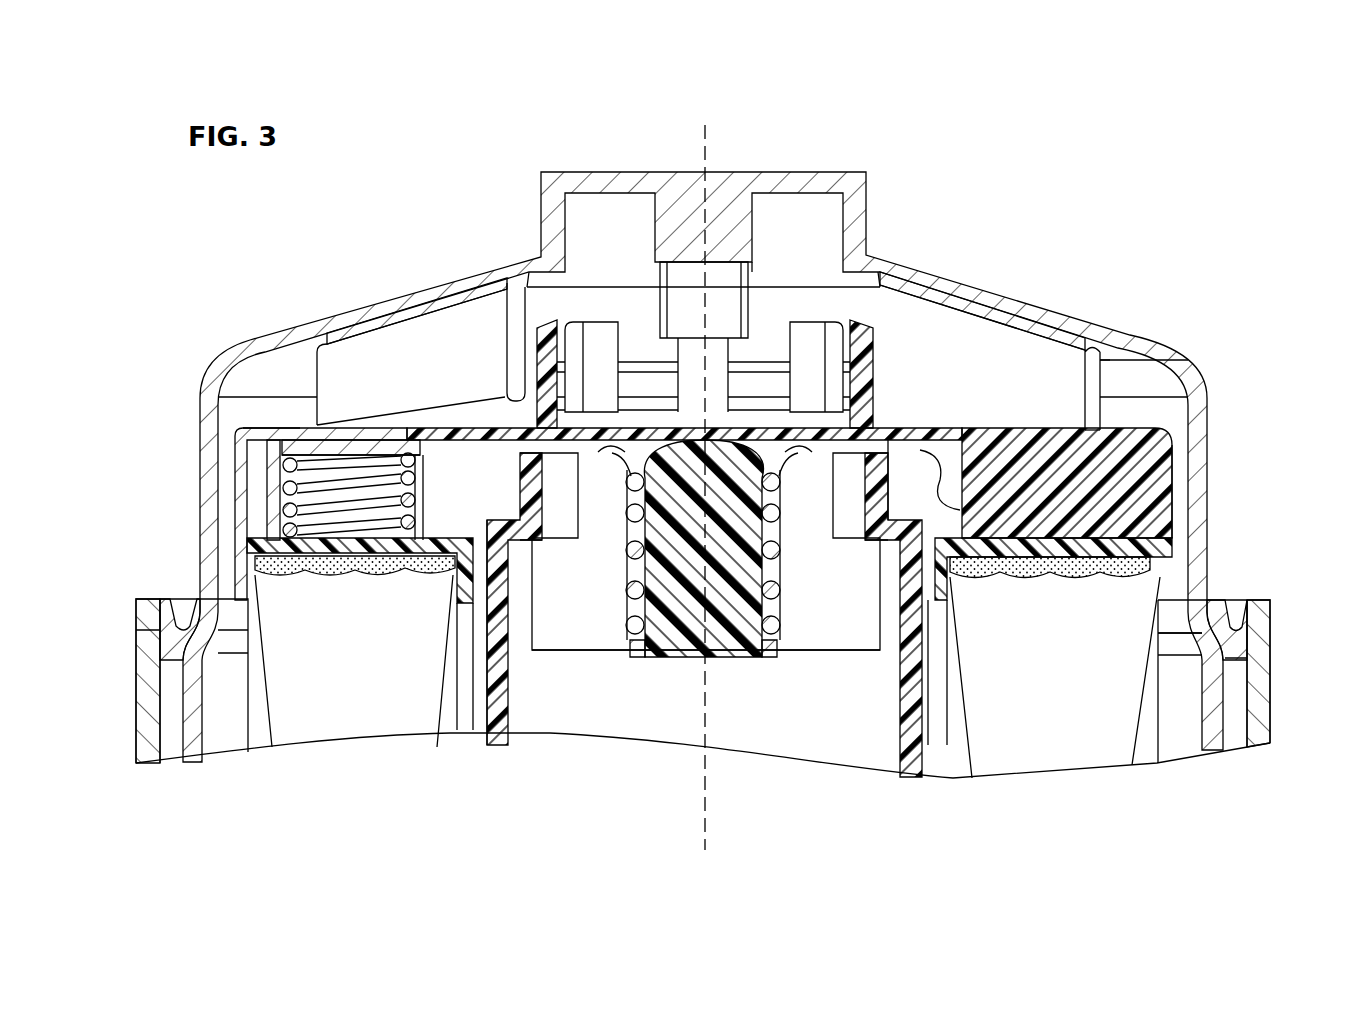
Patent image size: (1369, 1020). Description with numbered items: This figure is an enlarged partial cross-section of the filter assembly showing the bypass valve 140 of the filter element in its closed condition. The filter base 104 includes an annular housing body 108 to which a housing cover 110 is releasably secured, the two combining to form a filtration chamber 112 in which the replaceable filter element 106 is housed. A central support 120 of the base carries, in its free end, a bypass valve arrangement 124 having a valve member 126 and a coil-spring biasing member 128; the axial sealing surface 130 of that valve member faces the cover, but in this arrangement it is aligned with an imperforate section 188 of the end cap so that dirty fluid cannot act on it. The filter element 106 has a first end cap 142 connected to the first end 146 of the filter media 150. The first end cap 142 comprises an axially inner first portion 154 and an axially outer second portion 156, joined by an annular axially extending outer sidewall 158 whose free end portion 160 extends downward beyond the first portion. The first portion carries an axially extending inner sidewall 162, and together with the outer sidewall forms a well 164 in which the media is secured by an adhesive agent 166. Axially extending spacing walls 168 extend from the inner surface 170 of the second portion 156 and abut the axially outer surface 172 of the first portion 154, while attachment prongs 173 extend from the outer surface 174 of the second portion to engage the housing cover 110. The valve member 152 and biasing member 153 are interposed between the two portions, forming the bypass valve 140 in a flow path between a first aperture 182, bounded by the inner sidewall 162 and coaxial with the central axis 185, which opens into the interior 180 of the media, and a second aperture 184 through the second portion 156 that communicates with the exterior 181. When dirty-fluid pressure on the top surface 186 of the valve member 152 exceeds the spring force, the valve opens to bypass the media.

The filter base 104 is at (1303, 527).
The replaceable filter element 106 is at (1184, 403).
The annular housing body 108 is at (1258, 710).
The housing cover 110 is at (1018, 297).
The filtration chamber 112 is at (1175, 683).
The central support 120 is at (937, 652).
The bypass valve arrangement 124 is at (757, 674).
The valve member 126 is at (768, 578).
The biasing member 128 is at (780, 622).
The axial sealing surface 130 is at (810, 455).
The bypass valve 140 is at (389, 372).
The first end cap 142 is at (1131, 397).
The first end 146 is at (1175, 531).
The filter media 150 is at (1150, 560).
The valve member 152 is at (283, 441).
The biasing member 153 is at (282, 462).
The first portion 154 is at (542, 484).
The second portion 156 is at (467, 423).
The axially extending outer sidewall 158 is at (243, 482).
The free end portion 160 is at (228, 567).
The axially extending inner sidewall 162 is at (510, 735).
The well 164 is at (399, 600).
The adhesive agent 166 is at (335, 569).
The axially extending spacing walls 168 is at (1055, 433).
The inner surface 170 is at (1010, 482).
The axially outer surface 172 is at (542, 518).
The attachment prongs 173 is at (858, 330).
The outer surface 174 is at (903, 430).
The interior 180 is at (937, 722).
The exterior 181 is at (370, 343).
The first aperture 182 is at (500, 565).
The second aperture 184 is at (302, 418).
The central axis 185 is at (704, 140).
The top surface 186 is at (343, 440).
The imperforate section 188 is at (757, 430).